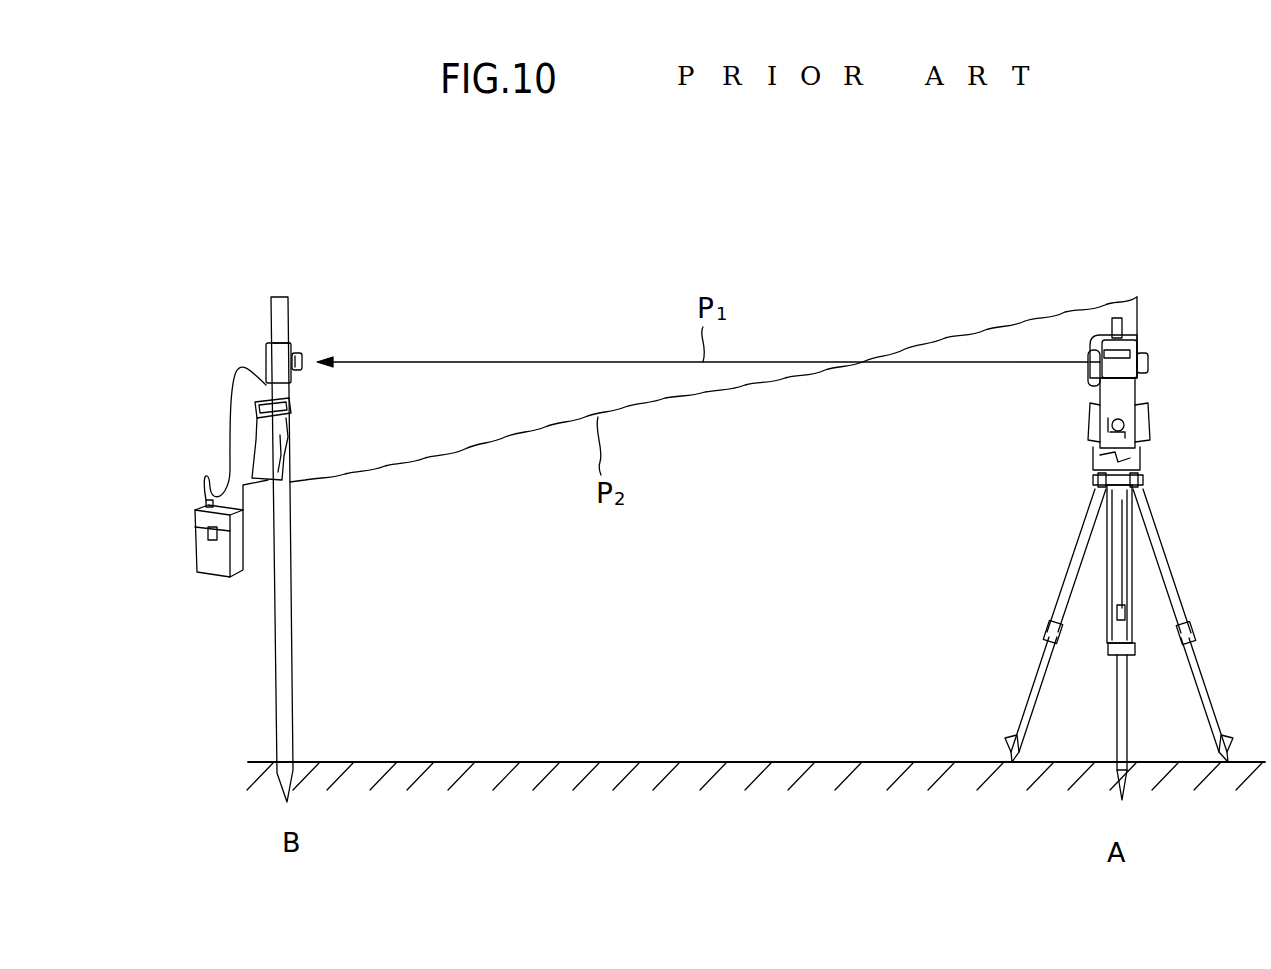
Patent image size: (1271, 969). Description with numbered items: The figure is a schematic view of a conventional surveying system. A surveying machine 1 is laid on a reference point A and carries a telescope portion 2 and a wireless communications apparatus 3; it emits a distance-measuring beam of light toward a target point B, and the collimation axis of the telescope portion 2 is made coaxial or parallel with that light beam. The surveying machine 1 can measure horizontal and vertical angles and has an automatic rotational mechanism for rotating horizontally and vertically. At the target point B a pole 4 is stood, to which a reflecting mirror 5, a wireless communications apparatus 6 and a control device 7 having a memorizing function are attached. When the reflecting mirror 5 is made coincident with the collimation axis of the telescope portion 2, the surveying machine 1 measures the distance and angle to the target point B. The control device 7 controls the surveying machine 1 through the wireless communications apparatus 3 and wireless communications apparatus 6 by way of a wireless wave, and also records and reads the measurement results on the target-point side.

The surveying machine 1 is at (1129, 353).
The telescope portion 2 is at (1088, 367).
The wireless communications apparatus 3 is at (1118, 350).
The pole 4 is at (293, 570).
The reflecting mirror 5 is at (300, 352).
The wireless communications apparatus 6 is at (197, 556).
The control device 7 is at (273, 436).